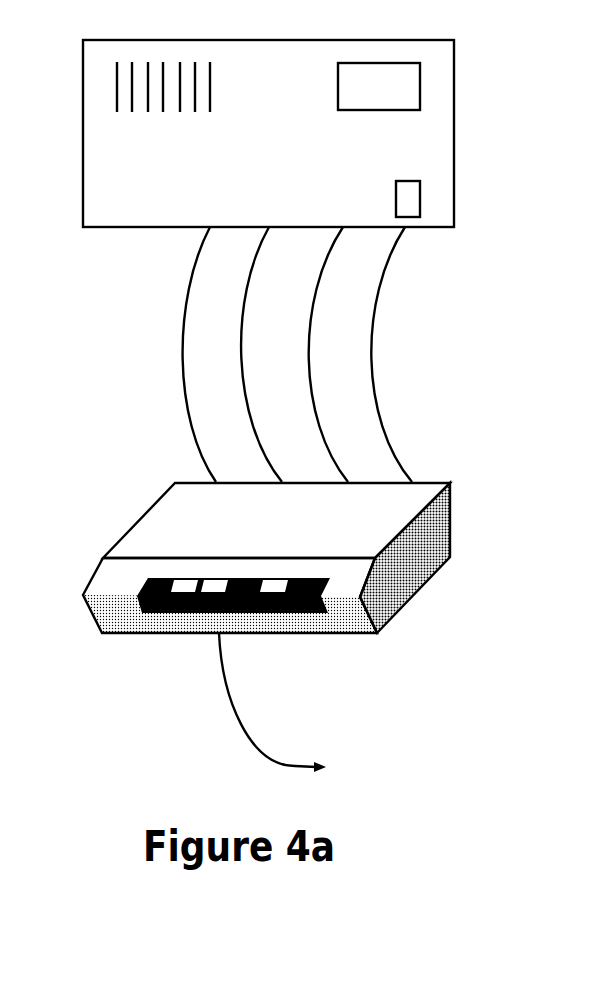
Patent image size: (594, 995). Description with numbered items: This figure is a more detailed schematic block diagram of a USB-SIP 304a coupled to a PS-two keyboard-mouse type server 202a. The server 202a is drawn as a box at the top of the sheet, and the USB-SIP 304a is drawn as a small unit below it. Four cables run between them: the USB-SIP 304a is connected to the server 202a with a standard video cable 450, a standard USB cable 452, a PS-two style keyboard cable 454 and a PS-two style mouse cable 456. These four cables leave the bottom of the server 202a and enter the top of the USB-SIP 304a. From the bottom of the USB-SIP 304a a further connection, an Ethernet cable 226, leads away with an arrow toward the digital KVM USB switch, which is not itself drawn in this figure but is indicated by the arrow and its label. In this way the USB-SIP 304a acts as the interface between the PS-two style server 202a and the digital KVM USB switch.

The server 202a is at (455, 122).
The standard video cable 450 is at (183, 319).
The standard USB cable 452 is at (245, 308).
The PS/2 style keyboard cable 454 is at (310, 327).
The PS/2 style mouse cable 456 is at (375, 332).
The USB-SIP 304a is at (433, 480).
The Ethernet cable 226 is at (240, 725).